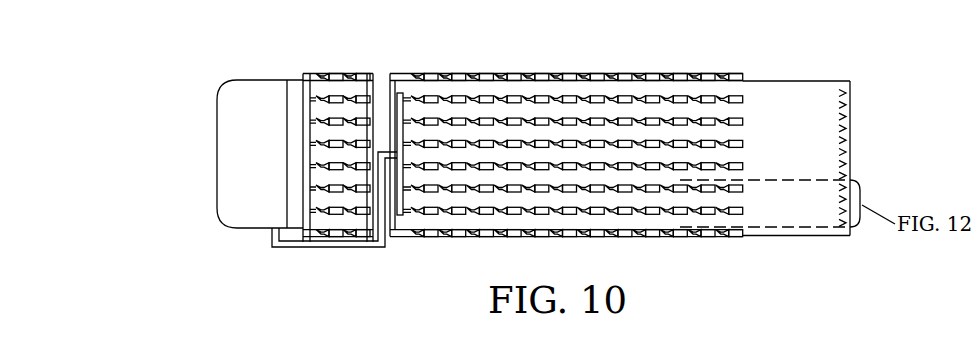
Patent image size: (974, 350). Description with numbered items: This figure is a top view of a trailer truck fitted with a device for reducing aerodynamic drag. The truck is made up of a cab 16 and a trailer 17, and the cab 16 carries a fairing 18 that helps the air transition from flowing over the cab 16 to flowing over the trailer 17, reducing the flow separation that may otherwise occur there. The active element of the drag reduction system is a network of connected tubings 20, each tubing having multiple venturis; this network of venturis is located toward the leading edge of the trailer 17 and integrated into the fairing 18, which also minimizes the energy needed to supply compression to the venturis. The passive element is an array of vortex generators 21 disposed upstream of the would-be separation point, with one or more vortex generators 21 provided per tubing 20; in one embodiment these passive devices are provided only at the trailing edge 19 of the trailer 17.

The cab 16 is at (248, 218).
The trailer 17 is at (849, 148).
The fairing 18 is at (323, 179).
The trailing edge 19 is at (851, 83).
The tubings 20 is at (338, 95).
The vortex generators 21 is at (848, 105).